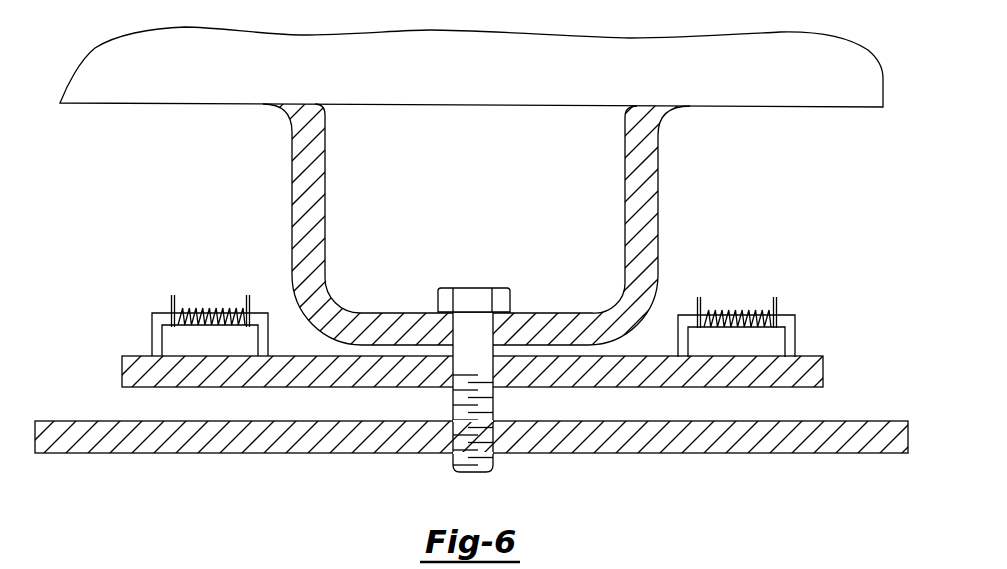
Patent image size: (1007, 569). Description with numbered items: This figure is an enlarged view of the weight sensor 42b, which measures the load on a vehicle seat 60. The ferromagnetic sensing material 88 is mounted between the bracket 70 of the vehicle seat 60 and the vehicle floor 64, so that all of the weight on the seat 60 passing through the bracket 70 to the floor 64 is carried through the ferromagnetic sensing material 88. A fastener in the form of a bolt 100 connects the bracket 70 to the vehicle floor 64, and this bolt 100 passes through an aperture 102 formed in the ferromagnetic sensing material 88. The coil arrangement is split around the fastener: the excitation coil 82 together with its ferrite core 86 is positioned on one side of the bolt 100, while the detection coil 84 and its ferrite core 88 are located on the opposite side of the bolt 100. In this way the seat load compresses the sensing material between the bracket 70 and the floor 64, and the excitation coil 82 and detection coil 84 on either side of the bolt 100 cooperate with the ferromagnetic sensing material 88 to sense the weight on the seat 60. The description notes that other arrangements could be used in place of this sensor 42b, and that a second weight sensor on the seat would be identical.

The vehicle seat 60 is at (498, 81).
The weight sensor 42b is at (110, 212).
The bracket 70 is at (658, 185).
The excitation coil 82 is at (171, 303).
The detection coil 84 is at (774, 301).
The ferrite core 86 is at (143, 331).
The ferromagnetic sensing material 88 is at (306, 398).
The bolt 100 is at (505, 276).
The aperture 102 is at (492, 338).
The vehicle floor 64 is at (614, 465).